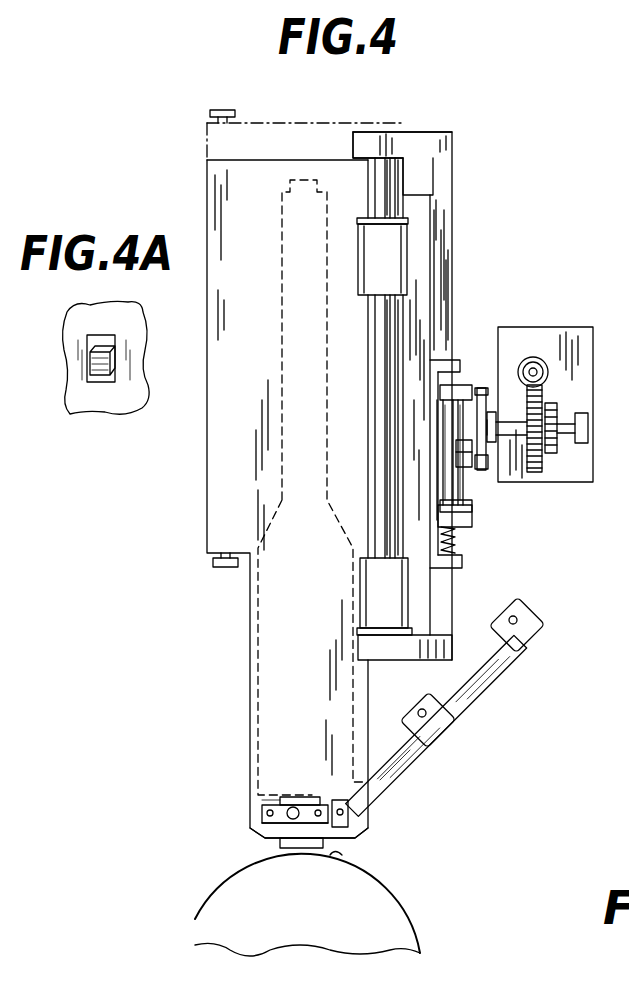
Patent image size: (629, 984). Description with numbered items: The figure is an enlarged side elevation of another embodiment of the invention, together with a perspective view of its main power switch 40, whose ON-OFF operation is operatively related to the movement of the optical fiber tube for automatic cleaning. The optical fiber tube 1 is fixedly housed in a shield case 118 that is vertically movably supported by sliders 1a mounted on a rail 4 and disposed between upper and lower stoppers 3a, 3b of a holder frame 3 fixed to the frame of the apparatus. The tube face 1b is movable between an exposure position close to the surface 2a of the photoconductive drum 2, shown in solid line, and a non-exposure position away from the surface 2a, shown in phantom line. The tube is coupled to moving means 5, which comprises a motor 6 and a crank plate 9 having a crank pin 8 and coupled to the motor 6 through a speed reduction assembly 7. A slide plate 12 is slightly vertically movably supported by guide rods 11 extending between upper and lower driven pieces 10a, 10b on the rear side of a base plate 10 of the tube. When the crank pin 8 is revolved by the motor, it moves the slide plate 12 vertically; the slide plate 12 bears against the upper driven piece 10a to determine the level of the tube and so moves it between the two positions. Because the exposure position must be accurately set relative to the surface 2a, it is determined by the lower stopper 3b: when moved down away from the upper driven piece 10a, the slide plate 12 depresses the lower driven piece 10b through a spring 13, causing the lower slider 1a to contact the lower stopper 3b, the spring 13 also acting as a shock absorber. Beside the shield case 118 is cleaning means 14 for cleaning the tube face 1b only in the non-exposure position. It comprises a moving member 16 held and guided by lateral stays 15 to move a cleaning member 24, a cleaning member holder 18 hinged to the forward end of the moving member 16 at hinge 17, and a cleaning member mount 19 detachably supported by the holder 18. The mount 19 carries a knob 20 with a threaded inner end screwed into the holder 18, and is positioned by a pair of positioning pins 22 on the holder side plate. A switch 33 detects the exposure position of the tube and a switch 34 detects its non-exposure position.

In FIG. 4, the optical fiber tube (OFT) 1 is at (282, 350).
In FIG. 4, the slider 1a is at (372, 258).
In FIG. 4, the tube face 1b is at (290, 850).
In FIG. 4, the photoconductive drum 2 is at (400, 922).
In FIG. 4, the drum surface 2a is at (335, 856).
In FIG. 4, the holder frame 3 is at (438, 140).
In FIG. 4, the upper stopper 3a is at (372, 135).
In FIG. 4, the lower stopper 3b is at (395, 655).
In FIG. 4, the rail 4 is at (375, 158).
In FIG. 4, the OFT moving means 5 is at (570, 320).
In FIG. 4, the motor 6 is at (593, 400).
In FIG. 4, the speed reduction assembly 7 is at (548, 373).
In FIG. 4, the crank pin 8 is at (466, 458).
In FIG. 4, the crank plate 9 is at (480, 388).
In FIG. 4, the base plate 10 is at (422, 200).
In FIG. 4, the upper driven piece 10a is at (455, 360).
In FIG. 4, the lower driven piece 10b is at (462, 562).
In FIG. 4, the guide rod 11 is at (455, 462).
In FIG. 4, the slide plate 12 is at (470, 512).
In FIG. 4, the spring 13 is at (460, 540).
In FIG. 4, the cleaning means 14 is at (406, 800).
In FIG. 4, the lateral stay 15 is at (522, 610).
In FIG. 4, the moving member 16 is at (412, 755).
In FIG. 4, the hinge 17 is at (338, 800).
In FIG. 4, the cleaning member holder 18 is at (340, 827).
In FIG. 4, the cleaning member mount 19 is at (280, 800).
In FIG. 4, the knob 20 is at (290, 823).
In FIG. 4, the positioning pin 22 is at (266, 813).
In FIG. 4, the cleaning member 24 is at (300, 797).
In FIG. 4, the exposure position detecting switch 33 is at (222, 567).
In FIG. 4, the non-exposure position detecting switch 34 is at (222, 108).
In FIG. 4A, the main switch 40 is at (88, 365).
In FIG. 4, the shield case 118 is at (207, 445).